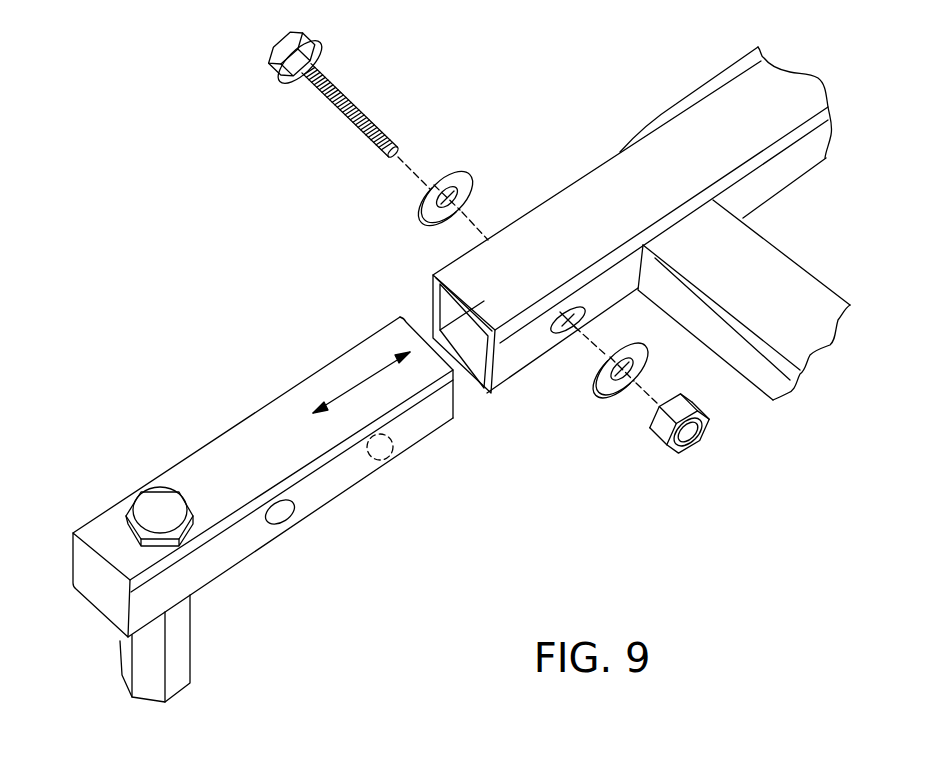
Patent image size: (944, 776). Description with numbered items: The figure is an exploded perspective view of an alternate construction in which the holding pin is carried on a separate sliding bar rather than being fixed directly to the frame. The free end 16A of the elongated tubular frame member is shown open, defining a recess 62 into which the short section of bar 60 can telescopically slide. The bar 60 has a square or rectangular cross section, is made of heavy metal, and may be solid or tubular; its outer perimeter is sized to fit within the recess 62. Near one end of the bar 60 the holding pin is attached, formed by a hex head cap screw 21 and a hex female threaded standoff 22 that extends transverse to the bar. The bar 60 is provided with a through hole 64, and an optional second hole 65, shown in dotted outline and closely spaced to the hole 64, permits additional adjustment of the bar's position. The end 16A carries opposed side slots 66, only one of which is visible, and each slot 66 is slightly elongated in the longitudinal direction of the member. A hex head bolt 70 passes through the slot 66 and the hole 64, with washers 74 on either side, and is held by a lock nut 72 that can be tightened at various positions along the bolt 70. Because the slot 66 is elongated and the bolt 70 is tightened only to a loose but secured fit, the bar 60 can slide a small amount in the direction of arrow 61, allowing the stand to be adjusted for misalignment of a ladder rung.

The free end 16A is at (570, 207).
The recess 62 is at (472, 377).
The side slot 66 is at (565, 337).
The bolt 70 is at (350, 84).
The washer 74 is at (425, 222).
The nut 72 is at (648, 438).
The bar 60 is at (255, 450).
The arrow 61 is at (360, 387).
The through hole 64 is at (288, 522).
The second hole 65 is at (392, 456).
The cap screw 21 is at (160, 510).
The standoff 22 is at (183, 636).